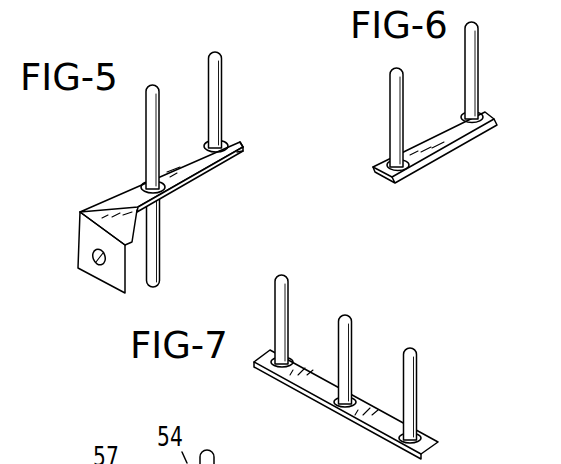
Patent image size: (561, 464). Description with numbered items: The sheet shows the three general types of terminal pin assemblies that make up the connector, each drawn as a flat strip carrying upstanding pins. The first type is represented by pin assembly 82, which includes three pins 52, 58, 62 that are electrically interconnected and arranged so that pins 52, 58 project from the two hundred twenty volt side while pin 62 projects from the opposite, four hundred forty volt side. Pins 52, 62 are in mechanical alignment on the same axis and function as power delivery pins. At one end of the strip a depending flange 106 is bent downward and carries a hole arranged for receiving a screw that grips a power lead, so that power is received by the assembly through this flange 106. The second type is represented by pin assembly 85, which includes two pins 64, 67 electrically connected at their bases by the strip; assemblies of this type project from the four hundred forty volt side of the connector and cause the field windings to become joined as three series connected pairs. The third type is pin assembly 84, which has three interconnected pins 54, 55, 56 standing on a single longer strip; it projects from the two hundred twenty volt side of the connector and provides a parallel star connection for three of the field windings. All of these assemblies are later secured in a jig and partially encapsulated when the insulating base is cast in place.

In FIG. 5, the pin 52 is at (146, 119).
In FIG. 5, the pin 58 is at (223, 103).
In FIG. 5, the pin 62 is at (162, 257).
In FIG. 5, the pin assembly 82 is at (95, 282).
In FIG. 5, the depending flange 106 is at (83, 242).
In FIG. 6, the pin 64 is at (480, 78).
In FIG. 6, the pin 67 is at (390, 90).
In FIG. 6, the pin assembly 85 is at (446, 166).
In FIG. 7, the pin 54 is at (290, 313).
In FIG. 7, the pin 55 is at (353, 350).
In FIG. 7, the pin 56 is at (418, 380).
In FIG. 7, the pin assembly 84 is at (450, 452).